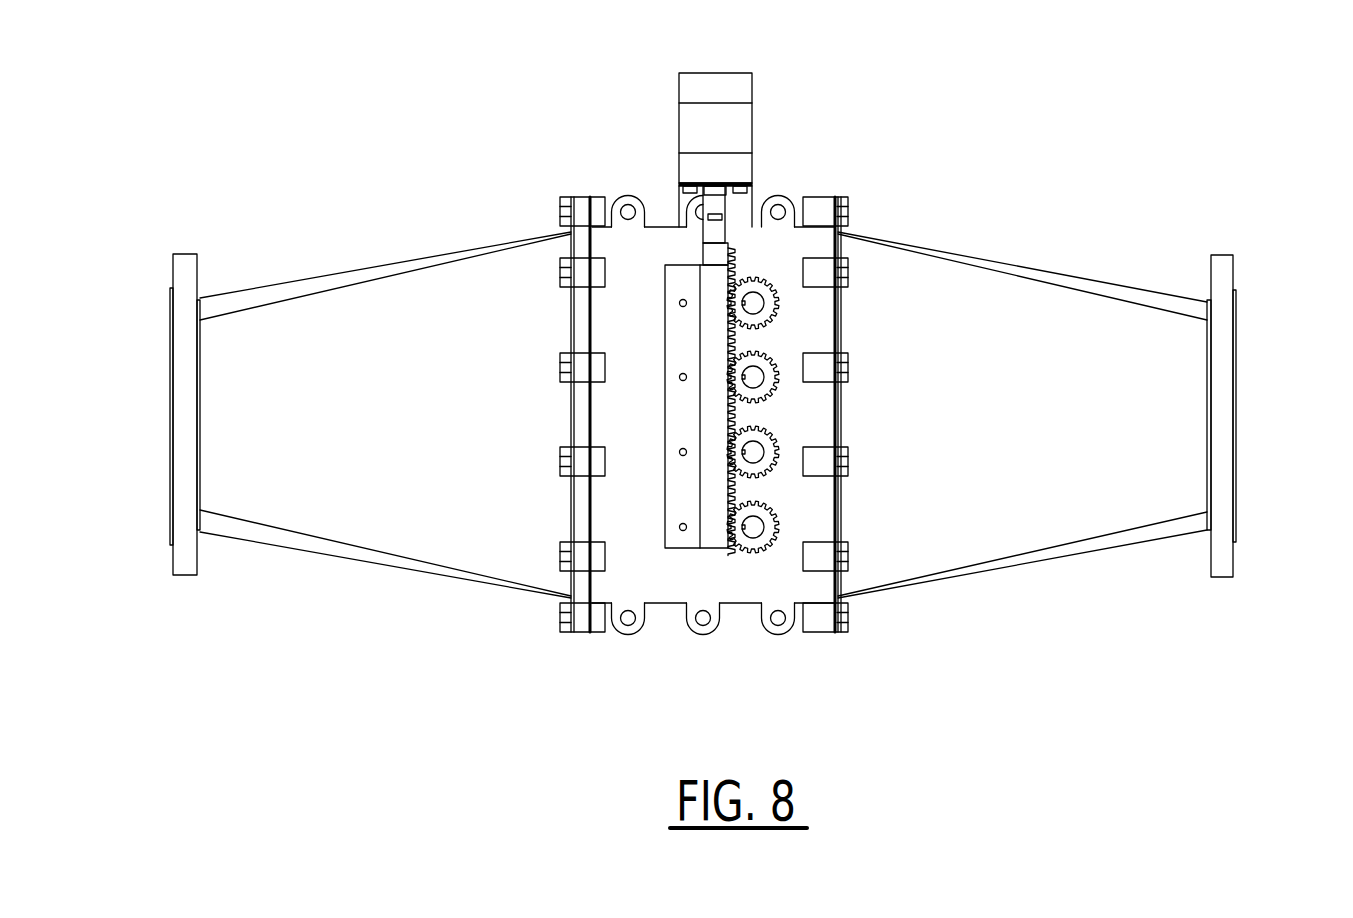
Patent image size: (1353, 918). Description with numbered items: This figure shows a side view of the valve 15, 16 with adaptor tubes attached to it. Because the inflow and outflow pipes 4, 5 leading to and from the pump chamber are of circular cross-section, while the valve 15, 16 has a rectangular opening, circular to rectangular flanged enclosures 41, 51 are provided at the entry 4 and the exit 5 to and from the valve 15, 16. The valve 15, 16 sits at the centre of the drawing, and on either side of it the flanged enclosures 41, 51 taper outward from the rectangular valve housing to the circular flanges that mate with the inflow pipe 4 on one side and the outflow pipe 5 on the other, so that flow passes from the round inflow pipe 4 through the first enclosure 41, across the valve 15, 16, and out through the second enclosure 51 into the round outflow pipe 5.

The inflow pipe 4 is at (318, 386).
The outflow pipe 5 is at (1093, 383).
The circular to rectangular flanged enclosure 41 is at (407, 306).
The circular to rectangular flanged enclosure 51 is at (1037, 305).
The valve 15 is at (802, 155).
The valve 16 is at (715, 169).